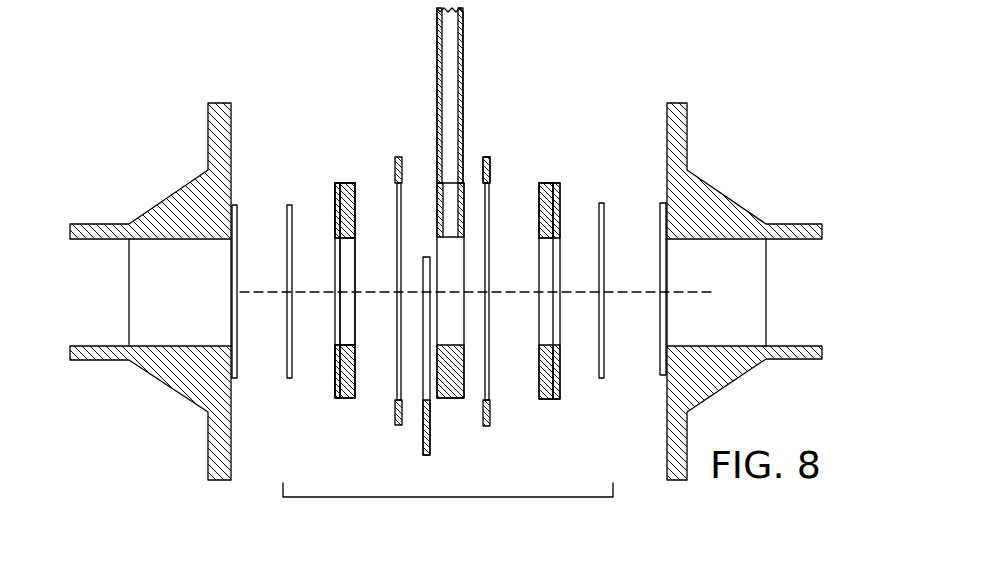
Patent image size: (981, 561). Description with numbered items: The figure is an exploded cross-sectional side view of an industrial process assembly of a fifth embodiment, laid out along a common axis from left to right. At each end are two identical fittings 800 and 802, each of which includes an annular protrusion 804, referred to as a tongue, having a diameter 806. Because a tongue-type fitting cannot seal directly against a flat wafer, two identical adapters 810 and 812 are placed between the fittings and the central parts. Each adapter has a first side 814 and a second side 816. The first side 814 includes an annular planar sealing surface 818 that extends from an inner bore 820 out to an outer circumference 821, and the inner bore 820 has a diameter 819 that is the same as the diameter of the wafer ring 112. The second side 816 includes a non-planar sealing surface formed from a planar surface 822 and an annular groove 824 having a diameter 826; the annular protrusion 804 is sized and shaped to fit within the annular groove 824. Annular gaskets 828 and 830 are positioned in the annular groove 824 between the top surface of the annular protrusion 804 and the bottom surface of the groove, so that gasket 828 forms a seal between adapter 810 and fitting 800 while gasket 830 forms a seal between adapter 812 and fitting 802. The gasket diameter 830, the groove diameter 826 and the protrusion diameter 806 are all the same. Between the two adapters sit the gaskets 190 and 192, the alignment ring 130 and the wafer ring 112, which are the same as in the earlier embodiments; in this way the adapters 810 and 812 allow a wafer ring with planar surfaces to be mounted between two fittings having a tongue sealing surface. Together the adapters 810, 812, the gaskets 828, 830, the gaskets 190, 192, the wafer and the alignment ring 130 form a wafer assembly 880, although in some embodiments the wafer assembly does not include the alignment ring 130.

The fitting 800 is at (219, 480).
The fitting 802 is at (676, 480).
The annular protrusion 804 is at (663, 376).
The diameter 806 is at (649, 368).
The adapter 810 is at (345, 398).
The adapter 812 is at (548, 399).
The first side 814 is at (520, 203).
The second side 816 is at (569, 189).
The annular planar sealing surface 818 is at (344, 366).
The diameter 819 is at (523, 343).
The inner bore 820 is at (356, 262).
The outer circumference 821 is at (343, 183).
The planar surface 822 is at (336, 360).
The annular groove 824 is at (335, 210).
The diameter 826 is at (575, 368).
The annular gasket 828 is at (289, 205).
The annular gasket 830 is at (273, 371).
The wafer assembly 880 is at (343, 498).
The wafer ring 112 is at (450, 398).
The alignment ring 130 is at (428, 456).
The gasket 190 is at (399, 425).
The gasket 192 is at (487, 426).